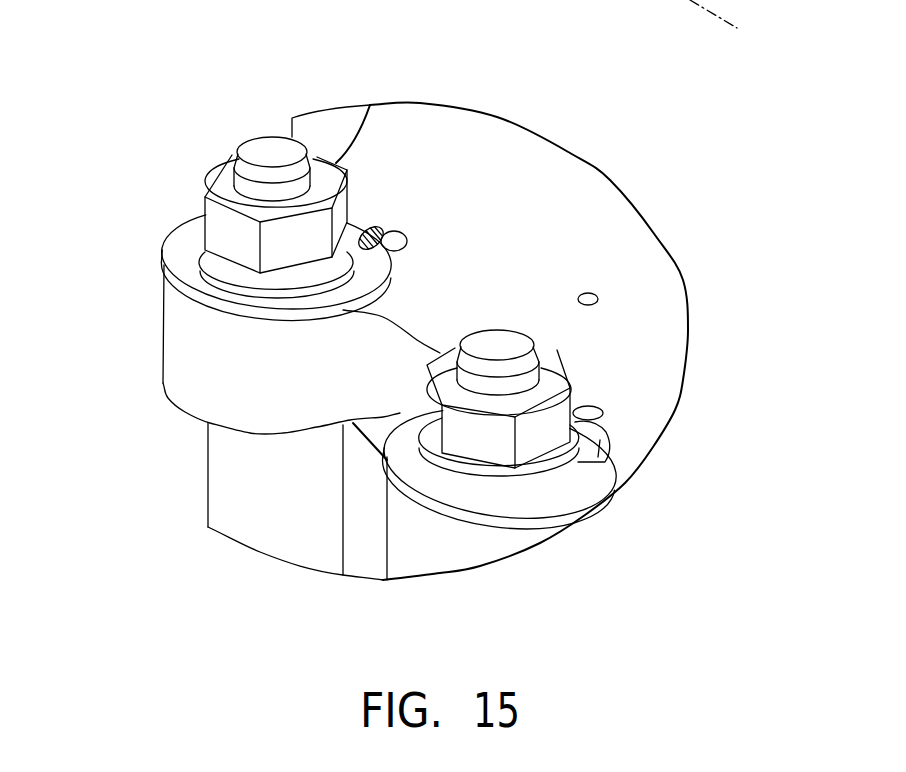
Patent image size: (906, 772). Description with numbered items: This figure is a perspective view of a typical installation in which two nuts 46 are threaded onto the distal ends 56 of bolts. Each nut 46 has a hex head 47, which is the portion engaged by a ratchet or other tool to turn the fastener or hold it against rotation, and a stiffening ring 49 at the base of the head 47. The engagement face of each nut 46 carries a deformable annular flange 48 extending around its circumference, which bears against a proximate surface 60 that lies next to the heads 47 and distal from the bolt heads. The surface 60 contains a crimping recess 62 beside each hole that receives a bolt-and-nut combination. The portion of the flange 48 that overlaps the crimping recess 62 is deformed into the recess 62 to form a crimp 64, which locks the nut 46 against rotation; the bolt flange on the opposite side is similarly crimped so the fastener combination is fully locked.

The nut 46 is at (152, 218).
The head 47 is at (227, 183).
The annular flange 48 is at (163, 272).
The stiffening ring 49 is at (233, 277).
The distal end 56 is at (263, 143).
The proximate surface 60 is at (531, 254).
The crimping recess 62 is at (383, 227).
The crimp 64 is at (362, 227).